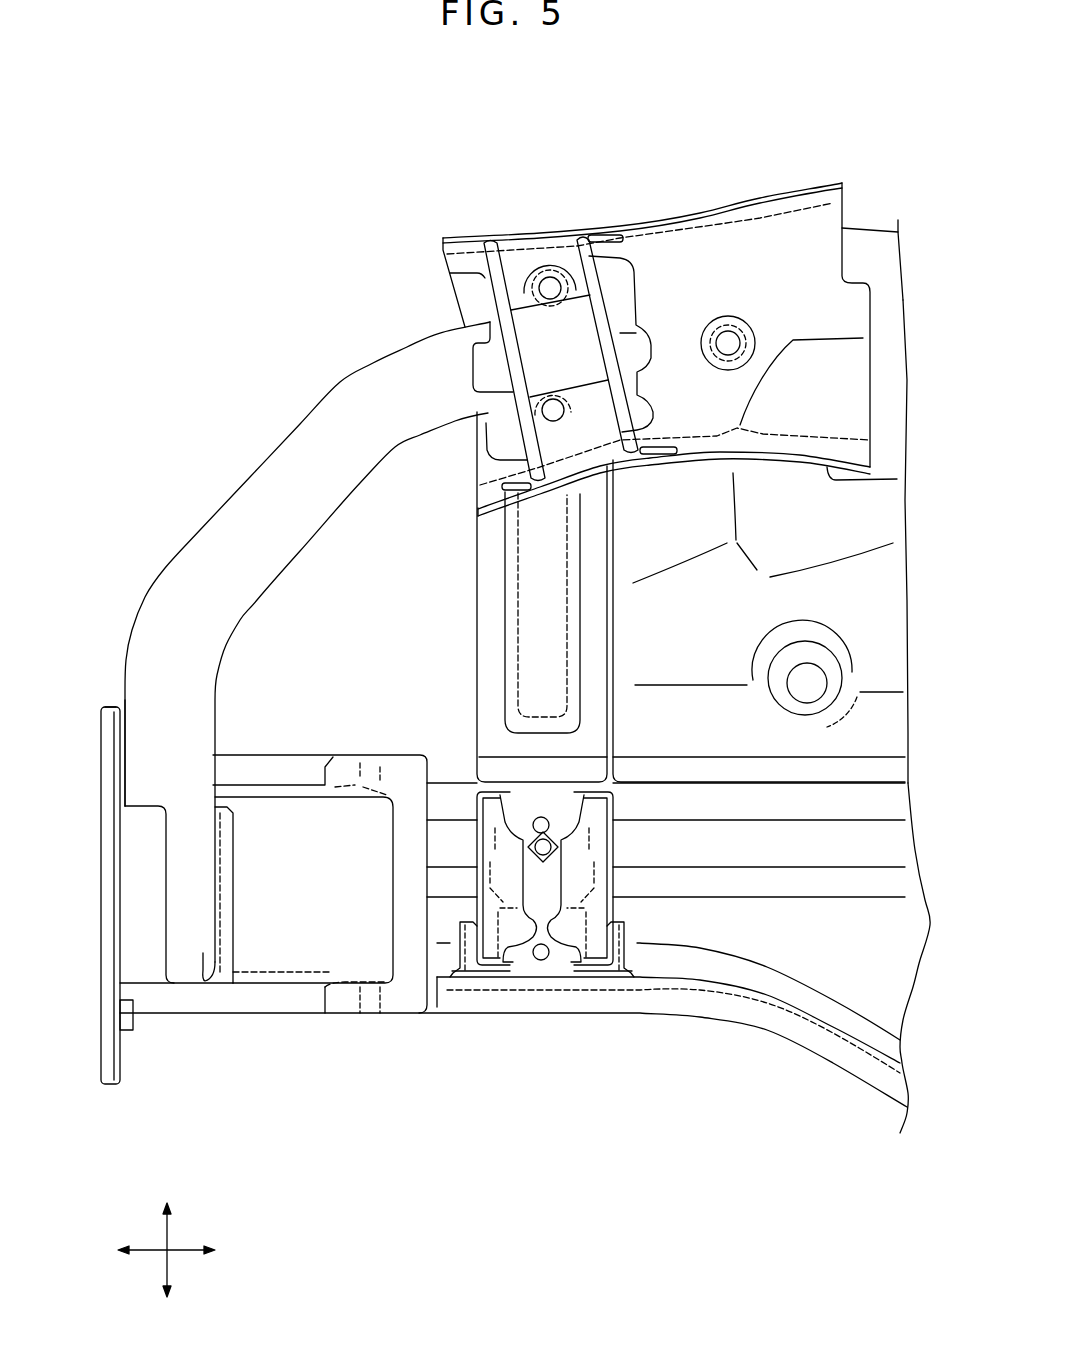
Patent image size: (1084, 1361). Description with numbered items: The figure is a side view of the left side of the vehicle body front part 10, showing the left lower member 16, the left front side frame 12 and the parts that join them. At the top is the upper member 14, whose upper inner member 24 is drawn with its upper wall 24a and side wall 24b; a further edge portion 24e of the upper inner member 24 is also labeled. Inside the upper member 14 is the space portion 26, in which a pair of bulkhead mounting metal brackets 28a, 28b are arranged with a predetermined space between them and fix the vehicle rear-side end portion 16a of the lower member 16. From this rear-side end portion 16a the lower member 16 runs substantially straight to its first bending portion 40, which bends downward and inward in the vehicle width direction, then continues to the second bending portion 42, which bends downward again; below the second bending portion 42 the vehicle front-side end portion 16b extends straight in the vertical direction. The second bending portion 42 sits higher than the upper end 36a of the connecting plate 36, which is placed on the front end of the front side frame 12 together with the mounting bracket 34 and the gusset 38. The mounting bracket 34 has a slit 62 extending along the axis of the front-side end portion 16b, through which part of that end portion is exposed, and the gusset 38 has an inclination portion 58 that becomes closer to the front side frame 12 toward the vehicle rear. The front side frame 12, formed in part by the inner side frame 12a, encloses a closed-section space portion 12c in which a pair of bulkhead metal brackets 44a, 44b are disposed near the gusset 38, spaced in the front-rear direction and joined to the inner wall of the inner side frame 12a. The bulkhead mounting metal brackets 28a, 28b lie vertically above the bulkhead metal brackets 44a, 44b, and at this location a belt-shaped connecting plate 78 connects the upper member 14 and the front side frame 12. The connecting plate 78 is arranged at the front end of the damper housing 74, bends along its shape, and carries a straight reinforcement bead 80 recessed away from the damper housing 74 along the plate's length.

The vehicle body front part 10 is at (817, 77).
The front side frame 12 is at (524, 1018).
The inner side frame 12a is at (905, 932).
The space portion 12c is at (756, 941).
The upper member 14 is at (691, 192).
The lower member 16 is at (268, 447).
The vehicle rear-side end portion 16a is at (540, 293).
The vehicle front-side end portion 16b is at (217, 868).
The upper inner member 24 is at (645, 222).
The upper wall 24a is at (798, 195).
The side wall 24b is at (825, 255).
The lower flange tab of side panel 24e is at (897, 479).
The space portion 26 is at (805, 311).
The bulkhead mounting metal bracket 28a is at (488, 250).
The bulkhead mounting metal bracket 28b is at (583, 240).
The mounting bracket 34 is at (240, 908).
The connecting plate 36 is at (96, 1030).
The upper end 36a is at (113, 706).
The gusset 38 is at (297, 988).
The first bending portion 40 is at (363, 367).
The second bending portion 42 is at (143, 600).
The bulkhead metal bracket 44a is at (466, 853).
The bulkhead metal bracket 44b is at (620, 852).
The inclination portion 58 is at (333, 897).
The slit 62 is at (202, 957).
The damper housing 74 is at (877, 588).
The connecting plate 78 is at (470, 580).
The reinforcement bead 80 is at (530, 635).